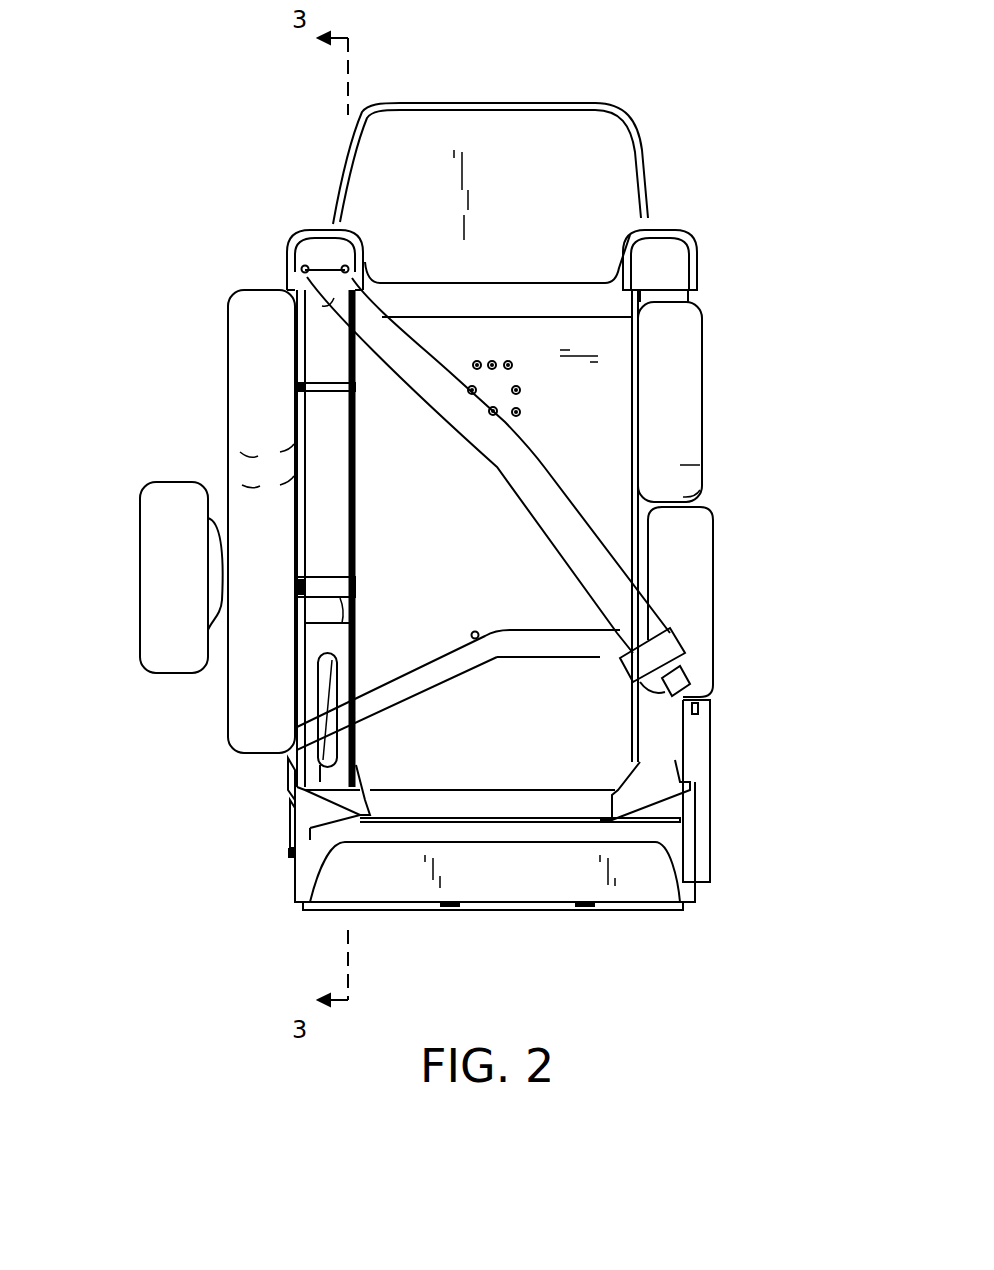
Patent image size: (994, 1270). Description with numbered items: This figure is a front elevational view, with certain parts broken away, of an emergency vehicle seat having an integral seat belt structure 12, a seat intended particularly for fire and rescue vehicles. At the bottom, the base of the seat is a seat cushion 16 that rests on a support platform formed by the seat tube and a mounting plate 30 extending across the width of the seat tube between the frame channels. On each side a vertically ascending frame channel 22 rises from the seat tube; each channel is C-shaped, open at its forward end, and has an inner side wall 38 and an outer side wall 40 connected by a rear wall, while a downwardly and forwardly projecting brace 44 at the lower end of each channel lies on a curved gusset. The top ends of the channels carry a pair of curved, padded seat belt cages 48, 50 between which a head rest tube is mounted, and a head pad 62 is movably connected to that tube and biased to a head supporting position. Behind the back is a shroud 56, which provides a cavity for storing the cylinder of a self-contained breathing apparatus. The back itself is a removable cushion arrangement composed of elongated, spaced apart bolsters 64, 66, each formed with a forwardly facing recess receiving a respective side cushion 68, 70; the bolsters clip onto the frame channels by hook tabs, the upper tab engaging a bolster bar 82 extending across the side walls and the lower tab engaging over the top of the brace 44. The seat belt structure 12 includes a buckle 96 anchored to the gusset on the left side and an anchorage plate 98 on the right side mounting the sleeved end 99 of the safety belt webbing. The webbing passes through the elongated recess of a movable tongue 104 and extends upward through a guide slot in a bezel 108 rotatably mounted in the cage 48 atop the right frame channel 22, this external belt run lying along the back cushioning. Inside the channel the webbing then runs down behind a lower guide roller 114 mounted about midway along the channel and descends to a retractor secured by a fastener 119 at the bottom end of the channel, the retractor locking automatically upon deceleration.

The integral seat belt structure 12 is at (640, 555).
The seat cushion 16 is at (505, 845).
The frame channel 22 is at (360, 525).
The mounting plate 30 is at (650, 905).
The inner side wall 38 is at (357, 452).
The outer side wall 40 is at (297, 432).
The brace 44 is at (365, 770).
The seat belt cage 48 is at (302, 240).
The seat belt cage 50 is at (700, 250).
The shroud 56 is at (548, 313).
The head pad 62 is at (605, 108).
The bolster 64 is at (228, 370).
The bolster 66 is at (703, 372).
The side cushion 68 is at (148, 580).
The side cushion 70 is at (713, 575).
The bolster bar 82 is at (322, 370).
The buckle 96 is at (712, 742).
The anchorage plate 98 is at (290, 832).
The sleeved end 99 is at (290, 790).
The tongue 104 is at (687, 646).
The bezel 108 is at (330, 234).
The lower guide roller 114 is at (325, 580).
The fastener 119 is at (289, 853).